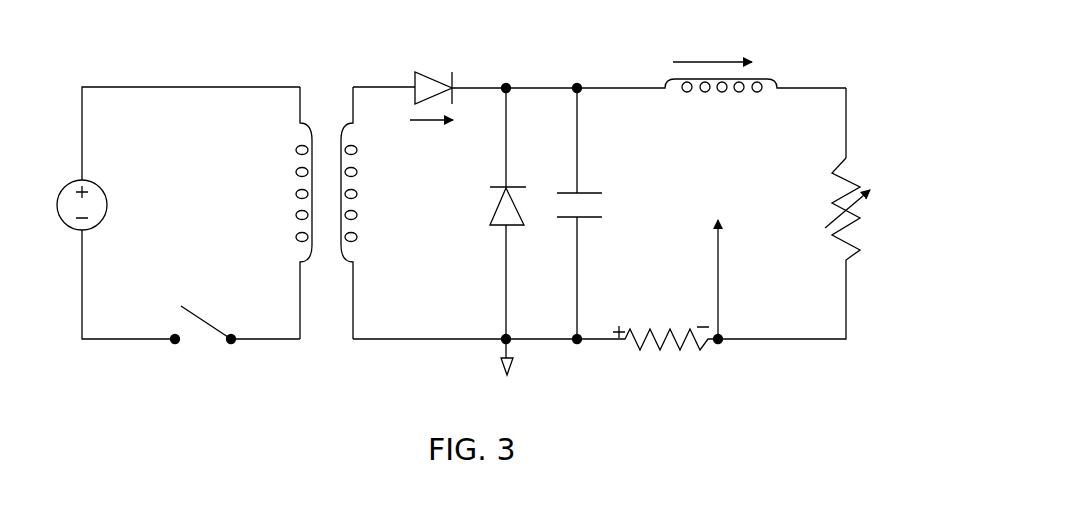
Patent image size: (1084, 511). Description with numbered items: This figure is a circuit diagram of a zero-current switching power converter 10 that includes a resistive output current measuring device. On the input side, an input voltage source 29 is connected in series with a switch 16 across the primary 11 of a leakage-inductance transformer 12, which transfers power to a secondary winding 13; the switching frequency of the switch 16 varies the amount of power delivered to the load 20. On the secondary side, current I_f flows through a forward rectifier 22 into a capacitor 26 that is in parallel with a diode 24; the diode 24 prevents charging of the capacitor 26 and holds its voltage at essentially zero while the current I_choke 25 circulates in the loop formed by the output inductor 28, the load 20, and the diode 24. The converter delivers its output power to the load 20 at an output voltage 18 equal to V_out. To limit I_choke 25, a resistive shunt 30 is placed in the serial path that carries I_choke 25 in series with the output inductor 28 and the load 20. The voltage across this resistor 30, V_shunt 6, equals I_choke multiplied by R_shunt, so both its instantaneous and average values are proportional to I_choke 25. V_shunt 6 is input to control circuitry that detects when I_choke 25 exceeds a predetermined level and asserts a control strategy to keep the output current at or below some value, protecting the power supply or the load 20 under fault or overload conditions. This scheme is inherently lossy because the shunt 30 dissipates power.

The ZCS converter 10 is at (134, 395).
The input voltage source 29 is at (105, 194).
The switch 16 is at (190, 311).
The leakage-inductance transformer 12 is at (337, 246).
The primary 11 is at (296, 193).
The secondary winding 13 is at (358, 193).
The forward rectifier 22 is at (423, 72).
The diode 24 is at (490, 218).
The capacitor 26 is at (597, 219).
The output inductor 28 is at (777, 79).
The I_choke 25 is at (690, 60).
The output voltage 18 is at (846, 88).
The load 20 is at (847, 167).
The resistive shunt 30 is at (655, 345).
The V_shunt 6 is at (640, 293).